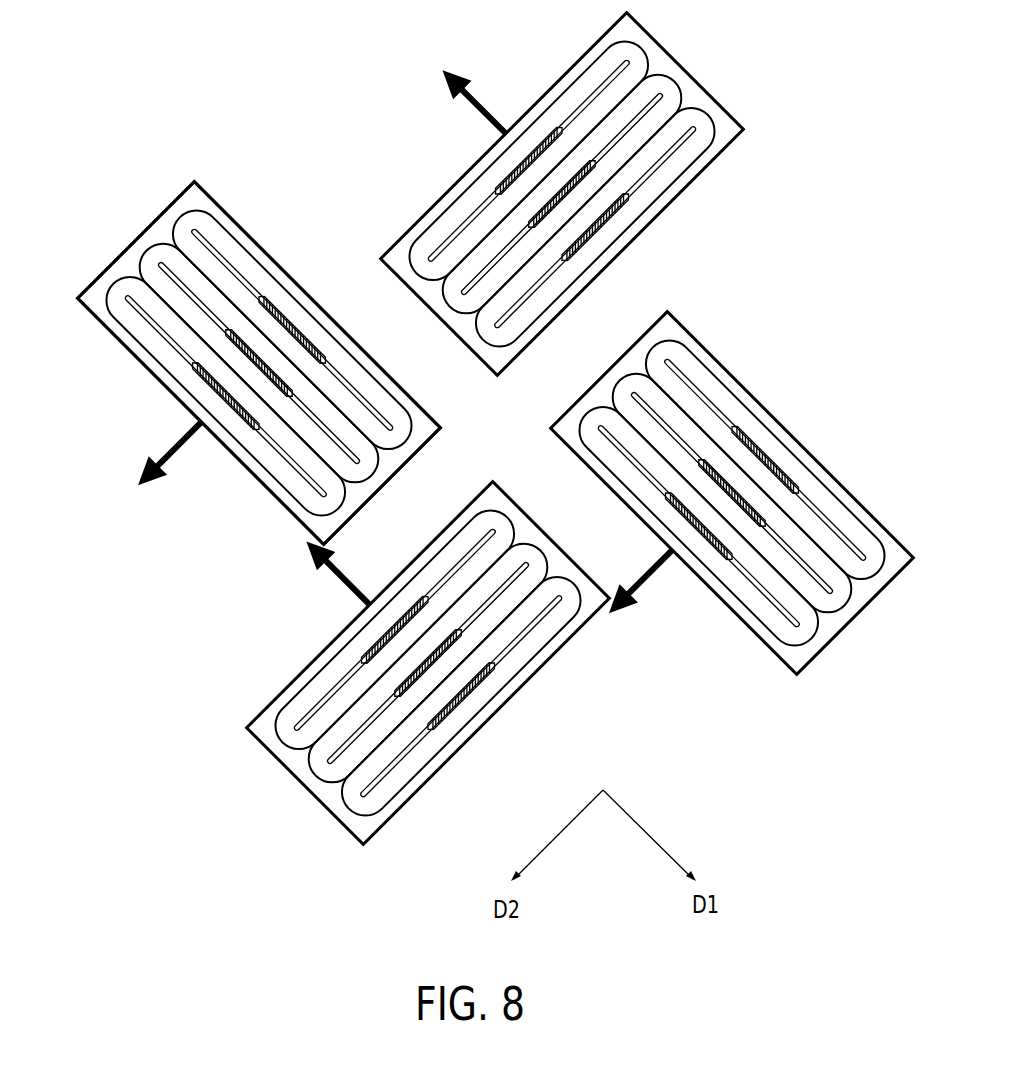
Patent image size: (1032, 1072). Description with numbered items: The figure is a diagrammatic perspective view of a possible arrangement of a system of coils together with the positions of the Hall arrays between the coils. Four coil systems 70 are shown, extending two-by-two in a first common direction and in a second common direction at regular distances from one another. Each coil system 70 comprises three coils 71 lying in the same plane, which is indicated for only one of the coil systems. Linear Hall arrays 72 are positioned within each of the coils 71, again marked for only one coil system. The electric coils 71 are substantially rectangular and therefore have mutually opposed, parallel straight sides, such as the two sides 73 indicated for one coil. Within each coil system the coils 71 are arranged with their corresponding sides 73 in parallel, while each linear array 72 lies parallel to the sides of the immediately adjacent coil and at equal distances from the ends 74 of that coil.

The coil system 70 is at (218, 218).
The coil 71 is at (173, 223).
The linear Hall array 72 is at (242, 403).
The sides 73 is at (305, 455).
The ends 74 is at (120, 302).